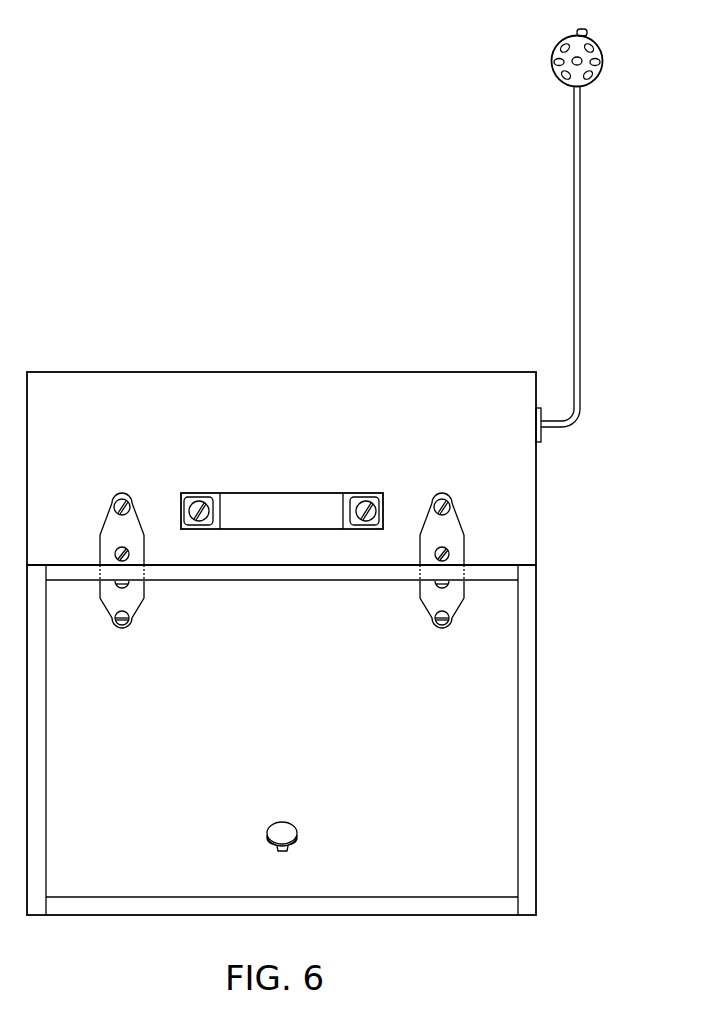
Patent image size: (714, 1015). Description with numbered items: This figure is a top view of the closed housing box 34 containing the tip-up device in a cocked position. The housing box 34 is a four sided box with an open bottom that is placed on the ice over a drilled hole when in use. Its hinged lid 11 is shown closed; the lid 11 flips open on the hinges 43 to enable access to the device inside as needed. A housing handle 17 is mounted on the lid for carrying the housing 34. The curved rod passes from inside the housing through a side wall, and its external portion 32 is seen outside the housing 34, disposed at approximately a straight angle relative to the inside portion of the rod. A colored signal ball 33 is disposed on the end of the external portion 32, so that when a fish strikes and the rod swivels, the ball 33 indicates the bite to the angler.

The hinged lid 11 is at (487, 800).
The housing handle 17 is at (304, 503).
The curved rod external portion 32 is at (575, 232).
The colored signal ball 33 is at (551, 63).
The housing box 34 is at (530, 625).
The hinges 43 is at (440, 518).